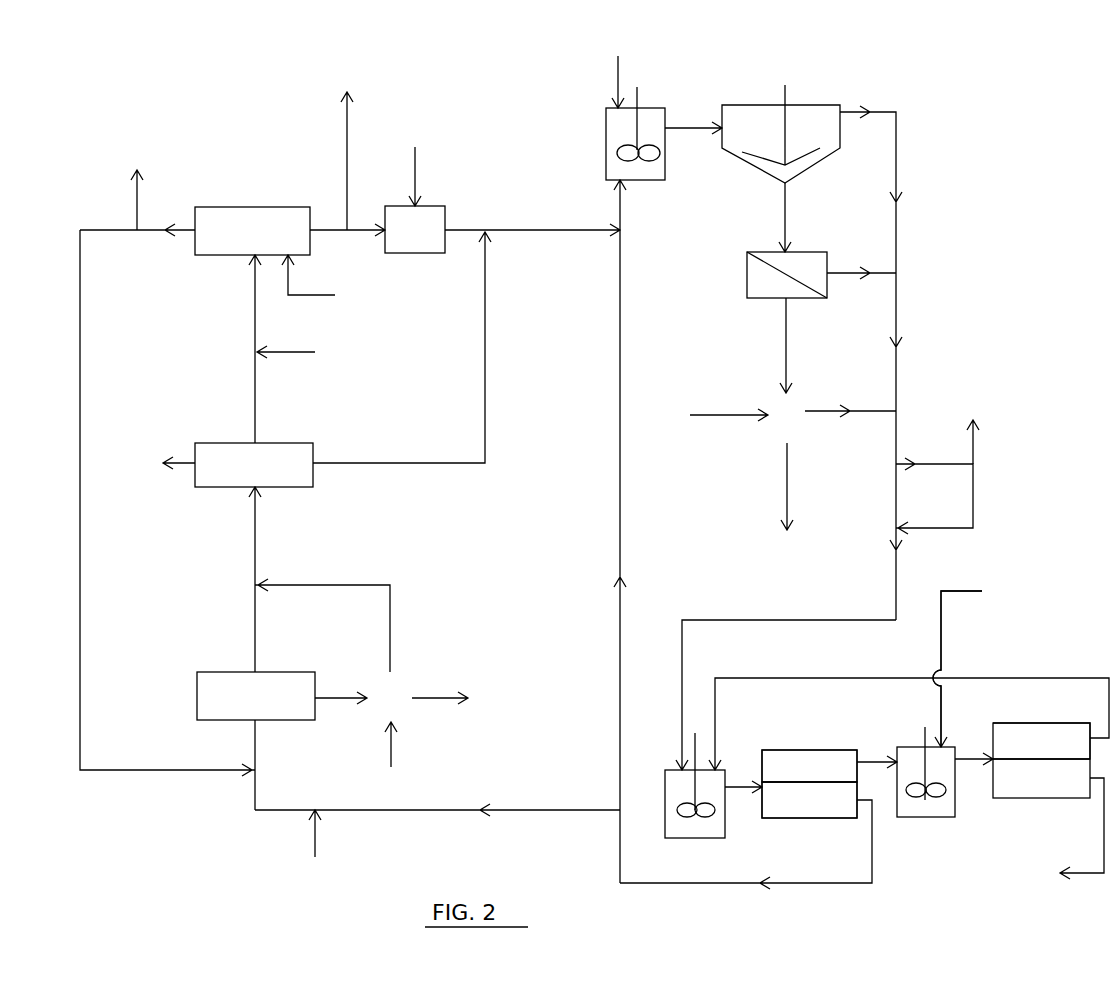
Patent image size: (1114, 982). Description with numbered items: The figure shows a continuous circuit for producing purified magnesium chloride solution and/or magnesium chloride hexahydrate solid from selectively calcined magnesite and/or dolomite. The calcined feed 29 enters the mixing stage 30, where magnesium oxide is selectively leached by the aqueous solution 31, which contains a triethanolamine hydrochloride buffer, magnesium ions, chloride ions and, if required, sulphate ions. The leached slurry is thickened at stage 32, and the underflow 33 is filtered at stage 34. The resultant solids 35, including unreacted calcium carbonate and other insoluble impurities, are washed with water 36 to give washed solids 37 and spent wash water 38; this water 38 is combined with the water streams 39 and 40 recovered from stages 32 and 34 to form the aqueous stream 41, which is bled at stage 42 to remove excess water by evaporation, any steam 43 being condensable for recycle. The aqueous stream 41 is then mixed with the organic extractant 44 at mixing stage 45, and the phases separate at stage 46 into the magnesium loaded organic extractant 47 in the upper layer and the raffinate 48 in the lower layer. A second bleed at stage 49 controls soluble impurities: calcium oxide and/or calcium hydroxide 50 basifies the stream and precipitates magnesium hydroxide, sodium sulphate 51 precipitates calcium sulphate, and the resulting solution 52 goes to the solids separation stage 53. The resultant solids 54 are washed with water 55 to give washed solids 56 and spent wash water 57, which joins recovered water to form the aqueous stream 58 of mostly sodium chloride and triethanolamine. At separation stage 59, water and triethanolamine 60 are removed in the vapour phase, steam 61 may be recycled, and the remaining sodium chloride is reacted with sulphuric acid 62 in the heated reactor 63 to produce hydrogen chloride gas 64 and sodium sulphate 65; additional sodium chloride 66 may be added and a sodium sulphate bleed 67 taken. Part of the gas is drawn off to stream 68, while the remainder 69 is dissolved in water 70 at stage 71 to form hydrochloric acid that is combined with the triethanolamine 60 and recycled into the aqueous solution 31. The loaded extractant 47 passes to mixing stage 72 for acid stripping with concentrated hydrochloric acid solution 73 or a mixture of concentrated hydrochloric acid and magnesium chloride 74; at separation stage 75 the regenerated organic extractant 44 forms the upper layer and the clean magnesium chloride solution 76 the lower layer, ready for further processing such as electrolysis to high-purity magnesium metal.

The selectively calcined magnesite and/or dolomite feed 29 is at (620, 70).
The mixing stage 30 is at (649, 133).
The aqueous solution 31 is at (636, 531).
The thickening stage 32 is at (781, 129).
The underflow 33 is at (773, 217).
The filtering stage 34 is at (770, 275).
The resultant solids 35 is at (788, 363).
The water 36 is at (715, 416).
The washed solids 37 is at (790, 504).
The spent wash water 38 is at (850, 400).
The water stream 39 is at (871, 352).
The water stream 40 is at (861, 262).
The aqueous stream 41 is at (786, 604).
The bleed stage 42 is at (934, 487).
The steam 43 is at (970, 430).
The organic extractant 44 is at (909, 712).
The mixing stage 45 is at (695, 801).
The phase separation stage 46 is at (811, 800).
The magnesium loaded organic extractant 47 is at (809, 767).
The raffinate 48 is at (746, 835).
The second bleed stage 49 is at (437, 800).
The calcium oxide and/or calcium hydroxide 50 is at (312, 848).
The sodium sulphate 51 is at (167, 503).
The solution 52 is at (272, 765).
The solids separation stage 53 is at (256, 696).
The resultant solids 54 is at (361, 698).
The water 55 is at (391, 760).
The washed solids 56 is at (456, 698).
The spent wash water 57 is at (340, 625).
The aqueous stream 58 is at (269, 579).
The separation stage 59 is at (254, 465).
The water and triethanolamine 60 is at (402, 347).
The steam 61 is at (165, 462).
The sulphuric acid 62 is at (323, 282).
The reactor 63 is at (252, 231).
The hydrogen chloride gas 64 is at (317, 333).
The sodium sulphate 65 is at (137, 218).
The additional sodium chloride 66 is at (302, 352).
The sodium sulphate bleed 67 is at (140, 187).
The hydrogen chloride gas stream 68 is at (348, 150).
The remainder of hydrogen chloride gas 69 is at (485, 247).
The water 70 is at (415, 163).
The dissolving stage 71 is at (415, 229).
The mixing stage 72 is at (945, 789).
The concentrated hydrochloric acid solution 73 is at (989, 664).
The mixture of concentrated hydrochloric acid and magnesium chloride 74 is at (989, 664).
The phase separation stage 75 is at (1041, 776).
The clean magnesium chloride solution 76 is at (1070, 830).